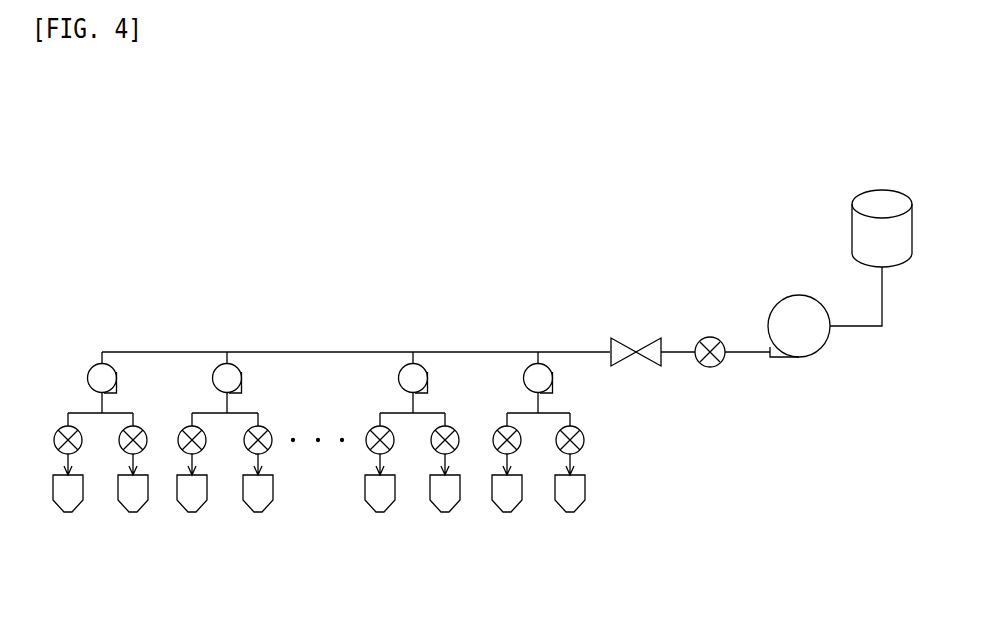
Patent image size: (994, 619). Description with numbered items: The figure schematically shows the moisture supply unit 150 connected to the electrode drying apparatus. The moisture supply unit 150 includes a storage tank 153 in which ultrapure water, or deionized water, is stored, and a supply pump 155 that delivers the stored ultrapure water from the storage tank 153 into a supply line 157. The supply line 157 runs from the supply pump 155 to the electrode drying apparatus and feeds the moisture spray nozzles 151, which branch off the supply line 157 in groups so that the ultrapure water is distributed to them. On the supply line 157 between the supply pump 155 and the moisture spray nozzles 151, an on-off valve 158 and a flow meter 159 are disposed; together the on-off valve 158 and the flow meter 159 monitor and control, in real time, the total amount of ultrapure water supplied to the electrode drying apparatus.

The moisture supply unit 150 is at (358, 266).
The moisture spray nozzles 151 is at (71, 512).
The storage tank 153 is at (880, 190).
The supply pump 155 is at (788, 303).
The supply line 157 is at (482, 352).
The on-off valve 158 is at (634, 337).
The flow meter 159 is at (710, 367).